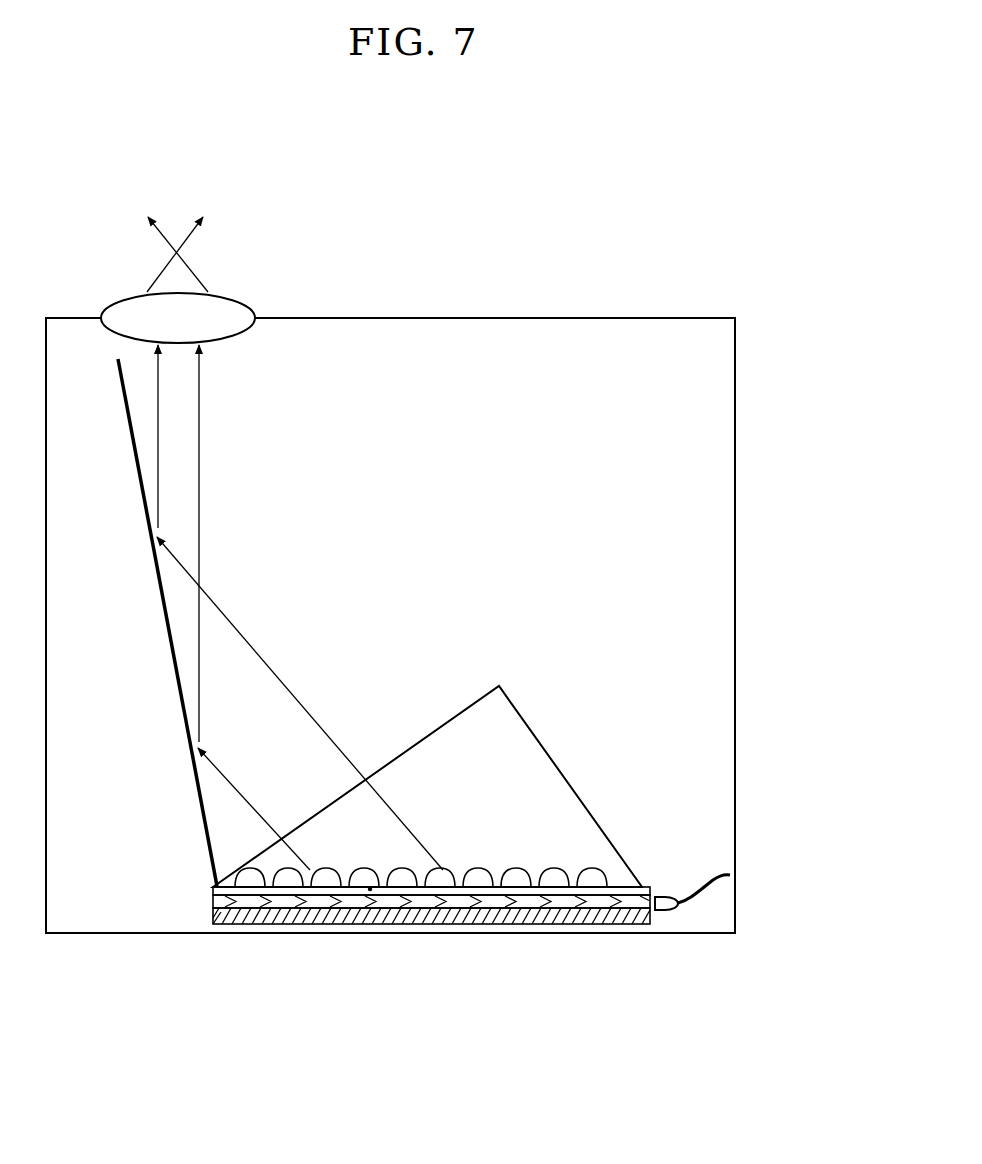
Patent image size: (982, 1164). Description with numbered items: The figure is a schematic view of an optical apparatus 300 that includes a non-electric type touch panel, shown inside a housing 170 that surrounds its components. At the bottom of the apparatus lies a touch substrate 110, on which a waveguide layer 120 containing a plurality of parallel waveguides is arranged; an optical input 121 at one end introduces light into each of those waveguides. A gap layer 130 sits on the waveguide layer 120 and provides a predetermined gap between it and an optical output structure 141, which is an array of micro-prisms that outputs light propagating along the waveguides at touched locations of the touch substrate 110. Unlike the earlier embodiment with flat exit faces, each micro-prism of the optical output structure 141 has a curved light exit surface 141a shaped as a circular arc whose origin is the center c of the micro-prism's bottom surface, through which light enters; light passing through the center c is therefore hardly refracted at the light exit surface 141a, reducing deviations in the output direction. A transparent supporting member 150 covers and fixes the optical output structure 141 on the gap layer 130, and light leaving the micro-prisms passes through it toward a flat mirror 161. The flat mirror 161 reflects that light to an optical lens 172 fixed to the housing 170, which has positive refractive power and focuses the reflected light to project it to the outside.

The optical apparatus 300 is at (748, 557).
The housing 170 is at (735, 376).
The optical lens 172 is at (225, 297).
The flat mirror 161 is at (170, 645).
The supporting member 150 is at (555, 773).
The optical output structure 141 is at (600, 875).
The light exit surface 141a is at (356, 878).
The center of the bottom surface c is at (372, 887).
The gap layer 130 is at (325, 895).
The waveguide layer 120 is at (443, 905).
The touch substrate 110 is at (563, 918).
The optical input 121 is at (661, 912).